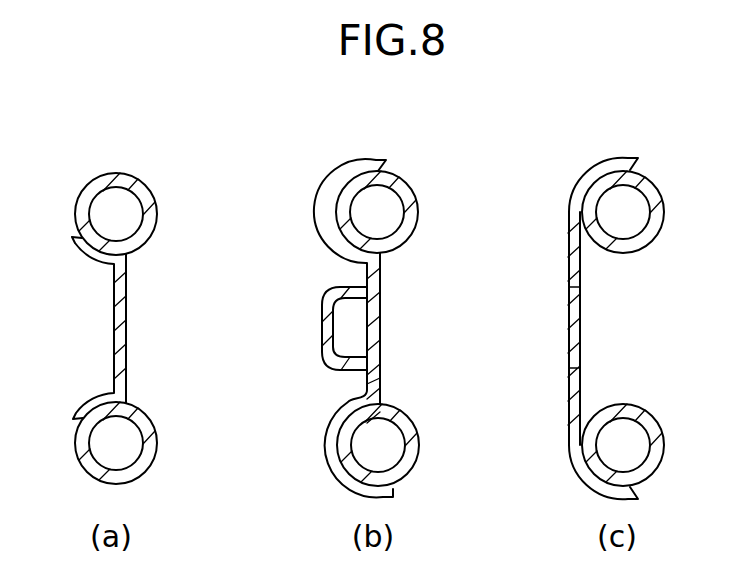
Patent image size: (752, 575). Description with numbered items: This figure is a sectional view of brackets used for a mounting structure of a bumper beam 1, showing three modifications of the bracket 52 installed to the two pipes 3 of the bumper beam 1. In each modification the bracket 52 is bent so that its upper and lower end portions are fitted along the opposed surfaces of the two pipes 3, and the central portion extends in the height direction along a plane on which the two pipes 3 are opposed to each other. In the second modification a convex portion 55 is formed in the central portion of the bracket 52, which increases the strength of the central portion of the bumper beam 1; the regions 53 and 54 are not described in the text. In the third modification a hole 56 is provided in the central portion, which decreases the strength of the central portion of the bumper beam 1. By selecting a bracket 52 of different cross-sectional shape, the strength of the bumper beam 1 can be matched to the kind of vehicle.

The bumper beam 1 is at (71, 164).
The pipes 3 is at (143, 191).
The bracket 52 is at (120, 318).
The connecting portion 53 is at (373, 384).
The connecting portion 54 is at (570, 276).
The convex portion 55 is at (328, 322).
The hole 56 is at (576, 332).